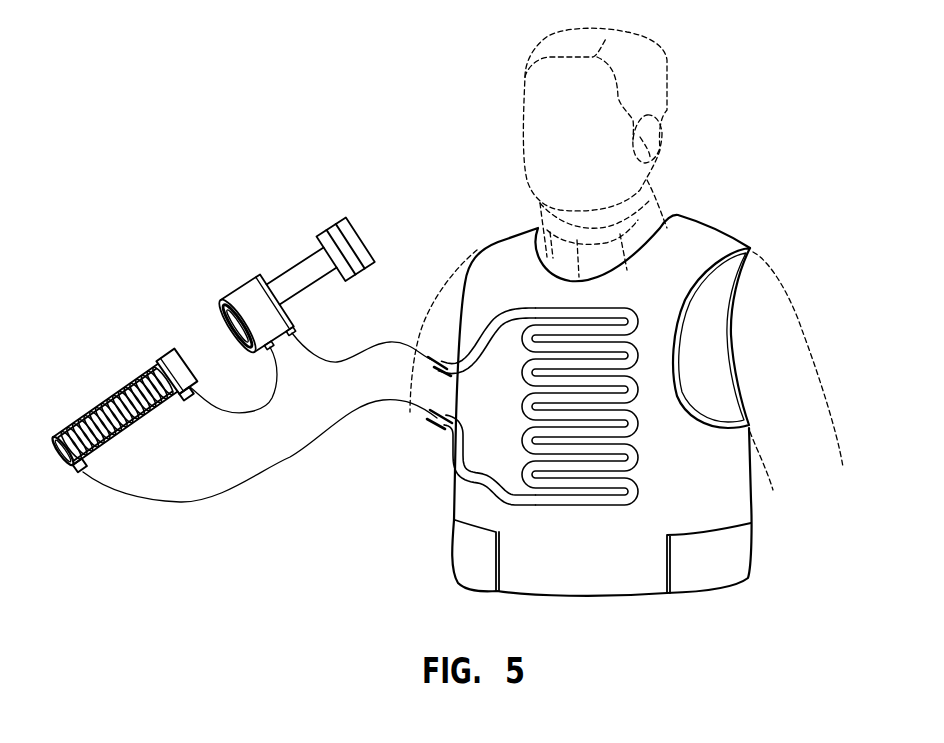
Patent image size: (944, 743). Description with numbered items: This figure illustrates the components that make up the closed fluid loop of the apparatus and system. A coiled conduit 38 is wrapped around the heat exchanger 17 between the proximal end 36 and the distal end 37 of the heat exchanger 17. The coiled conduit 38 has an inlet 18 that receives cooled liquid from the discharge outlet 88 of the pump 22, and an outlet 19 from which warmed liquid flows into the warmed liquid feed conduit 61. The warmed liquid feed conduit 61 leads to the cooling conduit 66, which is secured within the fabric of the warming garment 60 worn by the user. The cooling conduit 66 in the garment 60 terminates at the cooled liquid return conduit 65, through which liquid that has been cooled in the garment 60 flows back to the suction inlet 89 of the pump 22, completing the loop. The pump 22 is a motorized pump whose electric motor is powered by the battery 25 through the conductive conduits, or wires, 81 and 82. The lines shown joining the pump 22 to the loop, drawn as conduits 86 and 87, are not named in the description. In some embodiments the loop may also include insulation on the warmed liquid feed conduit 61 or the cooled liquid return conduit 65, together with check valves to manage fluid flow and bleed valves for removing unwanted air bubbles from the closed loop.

The heat exchanger 17 is at (152, 362).
The inlet 18 is at (187, 400).
The outlet 19 is at (77, 473).
The pump 22 is at (242, 287).
The battery 25 is at (333, 220).
The proximal end 36 is at (177, 350).
The distal end 37 is at (54, 440).
The coiled conduit 38 is at (118, 390).
The garment 60 is at (507, 250).
The warmed liquid feed conduit 61 is at (440, 428).
The cooled liquid return conduit 65 is at (437, 364).
The cooling conduit 66 is at (640, 459).
The conductive conduit 81 is at (305, 263).
The conductive conduit 82 is at (323, 290).
The hose 86 is at (336, 363).
The hose 87 is at (268, 400).
The discharge outlet 88 is at (265, 351).
The suction inlet 89 is at (293, 337).